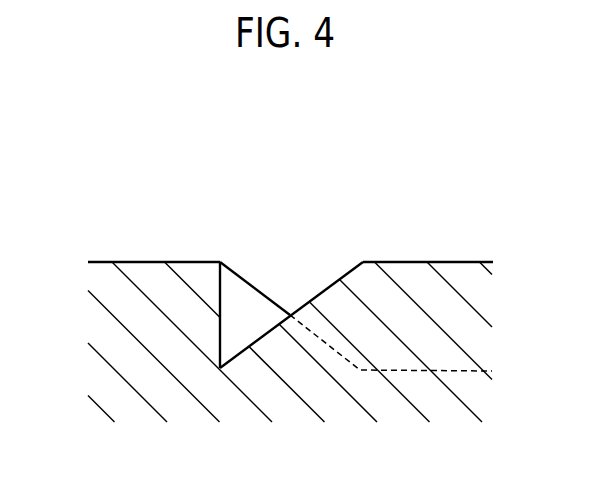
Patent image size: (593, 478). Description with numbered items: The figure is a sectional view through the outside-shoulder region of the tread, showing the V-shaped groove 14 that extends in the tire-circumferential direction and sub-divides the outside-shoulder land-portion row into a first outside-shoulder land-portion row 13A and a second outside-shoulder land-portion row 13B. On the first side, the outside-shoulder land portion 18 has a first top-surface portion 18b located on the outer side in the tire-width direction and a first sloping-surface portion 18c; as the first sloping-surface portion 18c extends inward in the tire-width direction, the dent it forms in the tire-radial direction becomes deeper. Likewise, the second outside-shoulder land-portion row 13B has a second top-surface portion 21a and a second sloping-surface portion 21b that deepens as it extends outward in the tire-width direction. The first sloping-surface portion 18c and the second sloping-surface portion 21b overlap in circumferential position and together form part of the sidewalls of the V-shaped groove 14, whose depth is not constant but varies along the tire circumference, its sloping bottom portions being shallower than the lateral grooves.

The first outside-shoulder land-portion row 13A is at (128, 259).
The second outside-shoulder land-portion row 13B is at (462, 259).
The V-shaped groove 14 is at (286, 302).
The outside-shoulder land portion 18 is at (100, 327).
The first top-surface portion 18b is at (183, 258).
The first sloping-surface portion 18c is at (251, 282).
The second top-surface portion 21a is at (400, 262).
The second sloping-surface portion 21b is at (326, 286).